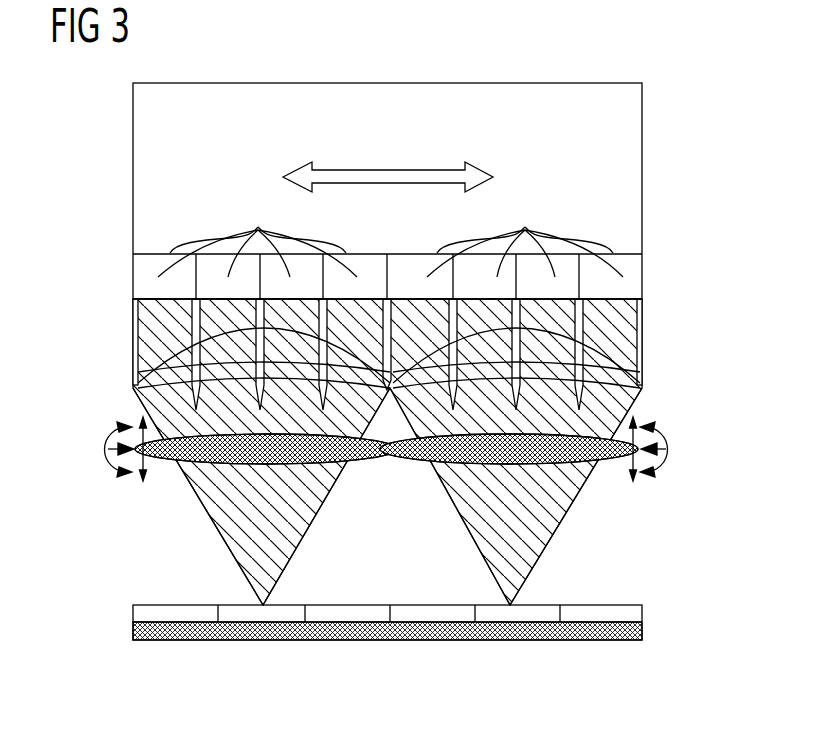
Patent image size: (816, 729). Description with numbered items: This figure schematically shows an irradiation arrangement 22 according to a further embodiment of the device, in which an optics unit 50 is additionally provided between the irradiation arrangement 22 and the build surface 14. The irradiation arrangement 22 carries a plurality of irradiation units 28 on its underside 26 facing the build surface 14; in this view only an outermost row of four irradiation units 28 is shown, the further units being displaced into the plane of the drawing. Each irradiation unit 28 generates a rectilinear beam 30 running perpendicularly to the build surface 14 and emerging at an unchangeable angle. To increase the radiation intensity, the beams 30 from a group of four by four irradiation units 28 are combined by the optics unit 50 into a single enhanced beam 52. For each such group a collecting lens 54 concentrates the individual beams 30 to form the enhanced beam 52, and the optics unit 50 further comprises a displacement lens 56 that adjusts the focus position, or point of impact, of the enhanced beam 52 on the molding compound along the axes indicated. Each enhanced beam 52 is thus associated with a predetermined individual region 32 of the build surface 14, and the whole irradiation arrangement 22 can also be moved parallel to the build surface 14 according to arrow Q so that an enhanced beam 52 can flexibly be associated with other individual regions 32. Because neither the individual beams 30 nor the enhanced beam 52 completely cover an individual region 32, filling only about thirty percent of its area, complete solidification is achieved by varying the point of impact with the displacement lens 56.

The build surface 14 is at (603, 583).
The irradiation arrangement 22 is at (153, 148).
The underside 26 is at (642, 301).
The irradiation units 28 is at (387, 248).
The rectilinear beam 30 is at (138, 313).
The individual region 32 is at (262, 641).
The optics unit 50 is at (110, 387).
The enhanced beam 52 is at (296, 552).
The collecting lens 54 is at (138, 350).
The displacement lens 56 is at (412, 463).
The arrow Q is at (387, 168).